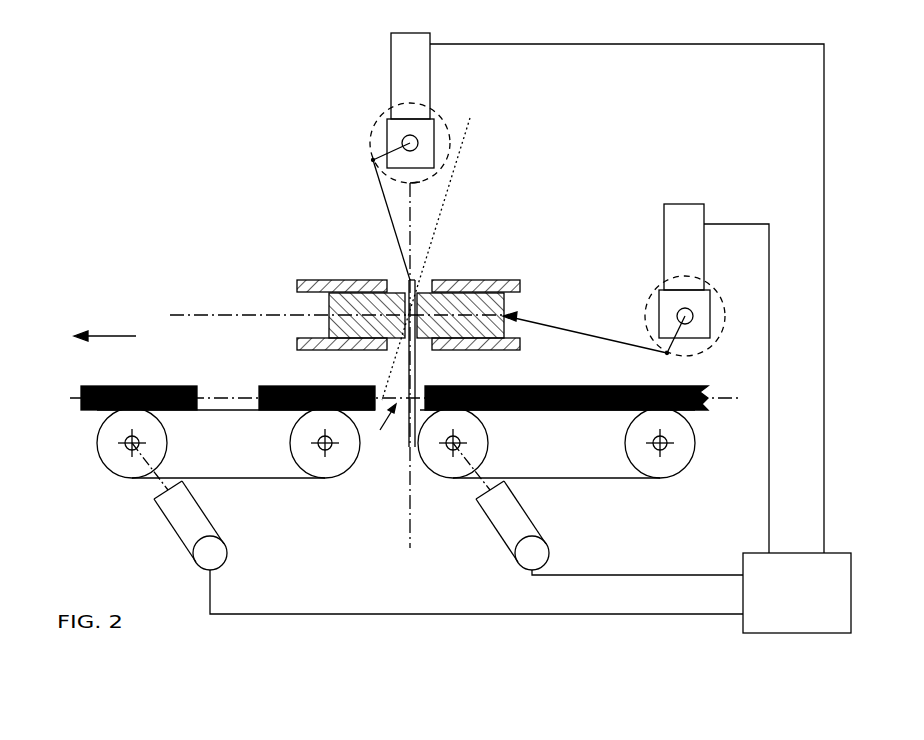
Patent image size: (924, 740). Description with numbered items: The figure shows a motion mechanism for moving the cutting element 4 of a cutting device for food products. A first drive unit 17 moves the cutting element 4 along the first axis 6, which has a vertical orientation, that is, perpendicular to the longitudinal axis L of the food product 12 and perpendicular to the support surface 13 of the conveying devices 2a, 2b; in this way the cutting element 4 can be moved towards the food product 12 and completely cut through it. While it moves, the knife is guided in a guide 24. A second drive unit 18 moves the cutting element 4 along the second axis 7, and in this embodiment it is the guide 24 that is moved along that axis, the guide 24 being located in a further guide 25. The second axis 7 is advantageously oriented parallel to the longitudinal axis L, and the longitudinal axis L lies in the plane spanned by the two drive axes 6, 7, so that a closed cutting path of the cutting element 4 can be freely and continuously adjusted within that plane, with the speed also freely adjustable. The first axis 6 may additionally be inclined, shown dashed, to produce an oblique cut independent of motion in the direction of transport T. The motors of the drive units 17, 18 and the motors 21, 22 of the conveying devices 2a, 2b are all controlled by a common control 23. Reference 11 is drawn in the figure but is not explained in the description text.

The first drive unit 17 is at (391, 82).
The first axis 6 is at (468, 152).
The further guide 25 is at (340, 280).
The guide 24 is at (503, 300).
The cutting element 4 is at (383, 386).
The second axis 7 is at (207, 315).
The direction of transport T is at (113, 336).
The food product 12 is at (160, 386).
The support surface 13 is at (247, 412).
The longitudinal axis L is at (414, 398).
The second conveying device 2b is at (290, 480).
The first conveying device 2a is at (619, 480).
The motor of conveying device 22 is at (210, 503).
The motor of conveying device 21 is at (532, 503).
The cutting gap / kerf 11 is at (382, 430).
The control 23 is at (839, 553).
The second drive unit 18 is at (664, 215).